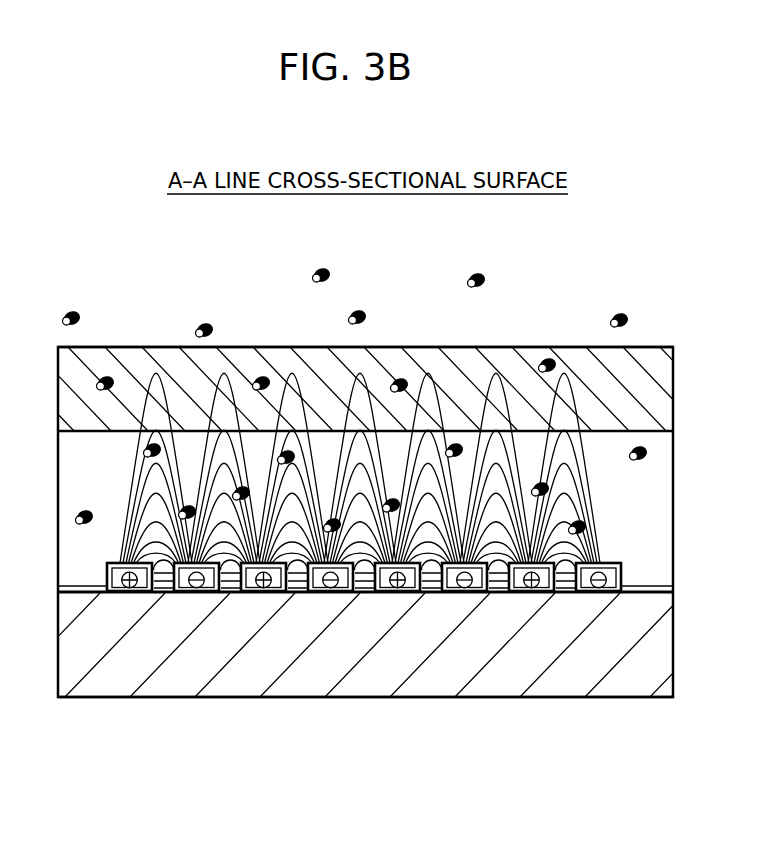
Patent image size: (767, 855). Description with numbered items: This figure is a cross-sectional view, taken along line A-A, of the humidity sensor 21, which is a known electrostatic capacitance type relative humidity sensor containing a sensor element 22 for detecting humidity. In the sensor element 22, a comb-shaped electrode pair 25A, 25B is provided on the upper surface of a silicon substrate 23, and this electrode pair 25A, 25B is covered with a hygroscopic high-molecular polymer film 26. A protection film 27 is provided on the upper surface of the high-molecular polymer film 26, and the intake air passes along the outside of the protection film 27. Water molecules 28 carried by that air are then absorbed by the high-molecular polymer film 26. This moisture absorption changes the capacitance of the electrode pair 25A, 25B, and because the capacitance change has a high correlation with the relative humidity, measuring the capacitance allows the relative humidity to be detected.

The humidity sensor 21 is at (550, 272).
The sensor element 22 is at (382, 346).
The silicon substrate 23 is at (660, 647).
The comb-shaped electrode 25A is at (139, 594).
The comb-shaped electrode 25B is at (206, 594).
The hygroscopic high-molecular polymer film 26 is at (655, 503).
The protection film 27 is at (650, 395).
The water molecules 28 is at (79, 311).